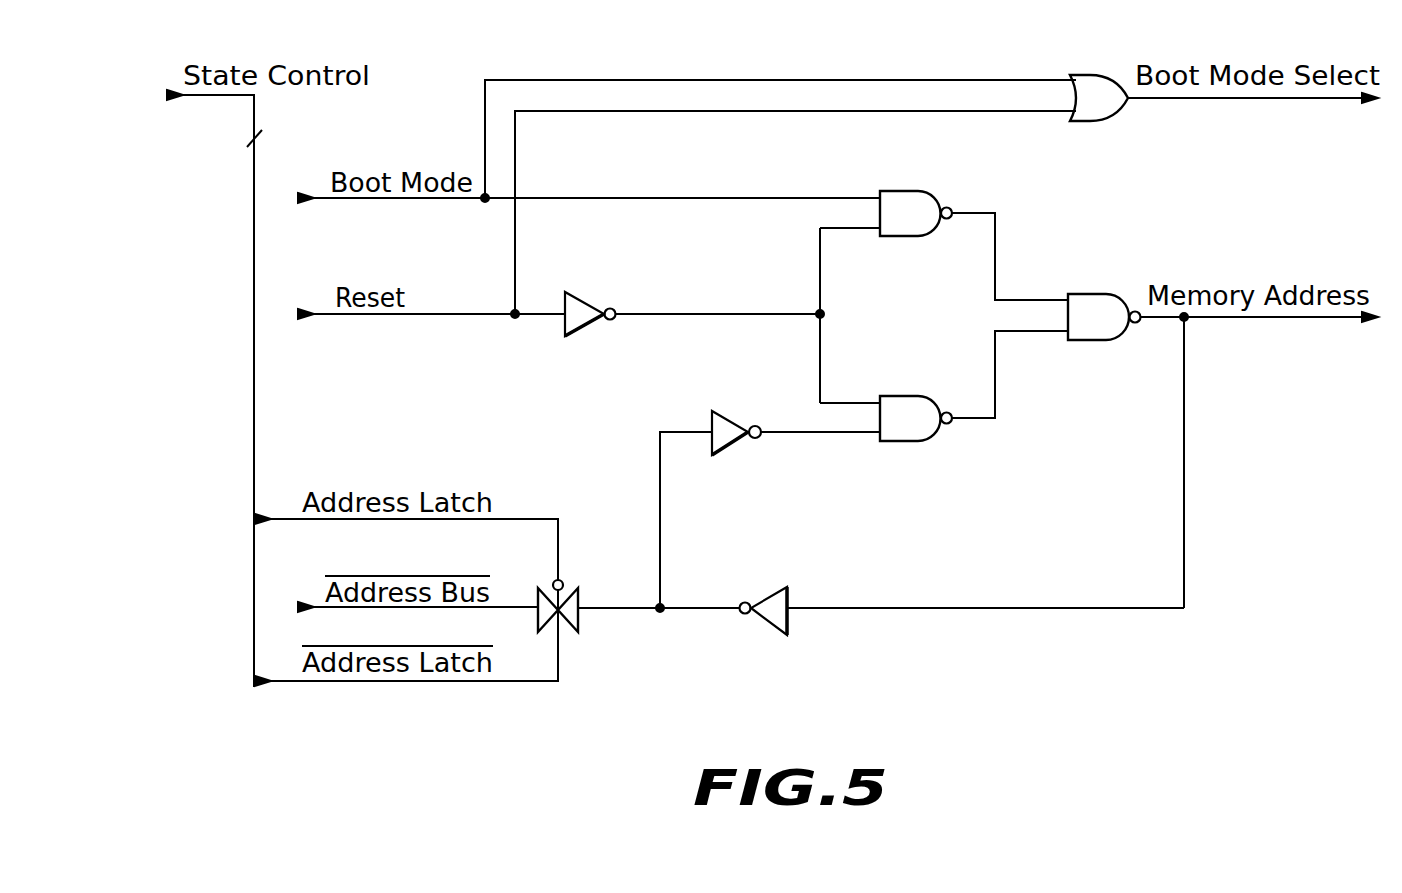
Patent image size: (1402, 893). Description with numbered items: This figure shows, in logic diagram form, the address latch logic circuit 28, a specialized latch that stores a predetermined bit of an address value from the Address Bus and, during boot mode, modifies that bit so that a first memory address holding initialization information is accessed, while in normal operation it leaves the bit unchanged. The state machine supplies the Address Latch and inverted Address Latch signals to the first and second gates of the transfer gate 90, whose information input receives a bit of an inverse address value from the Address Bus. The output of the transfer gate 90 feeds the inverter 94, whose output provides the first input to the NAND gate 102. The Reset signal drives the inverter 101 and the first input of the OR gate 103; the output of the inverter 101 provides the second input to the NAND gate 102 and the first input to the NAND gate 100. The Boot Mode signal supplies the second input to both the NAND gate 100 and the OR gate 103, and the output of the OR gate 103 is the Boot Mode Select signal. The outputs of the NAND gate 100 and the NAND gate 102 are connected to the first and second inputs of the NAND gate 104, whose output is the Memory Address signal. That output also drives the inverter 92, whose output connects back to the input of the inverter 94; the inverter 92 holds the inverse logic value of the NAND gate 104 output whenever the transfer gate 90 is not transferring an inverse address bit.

The address latch logic circuit 28 is at (1189, 647).
The transfer gate 90 is at (567, 587).
The inverter 92 is at (772, 628).
The inverter 94 is at (725, 417).
The NAND gate 100 is at (898, 191).
The inverter 101 is at (578, 297).
The NAND gate 102 is at (898, 397).
The OR gate 103 is at (1097, 72).
The NAND gate 104 is at (1078, 293).